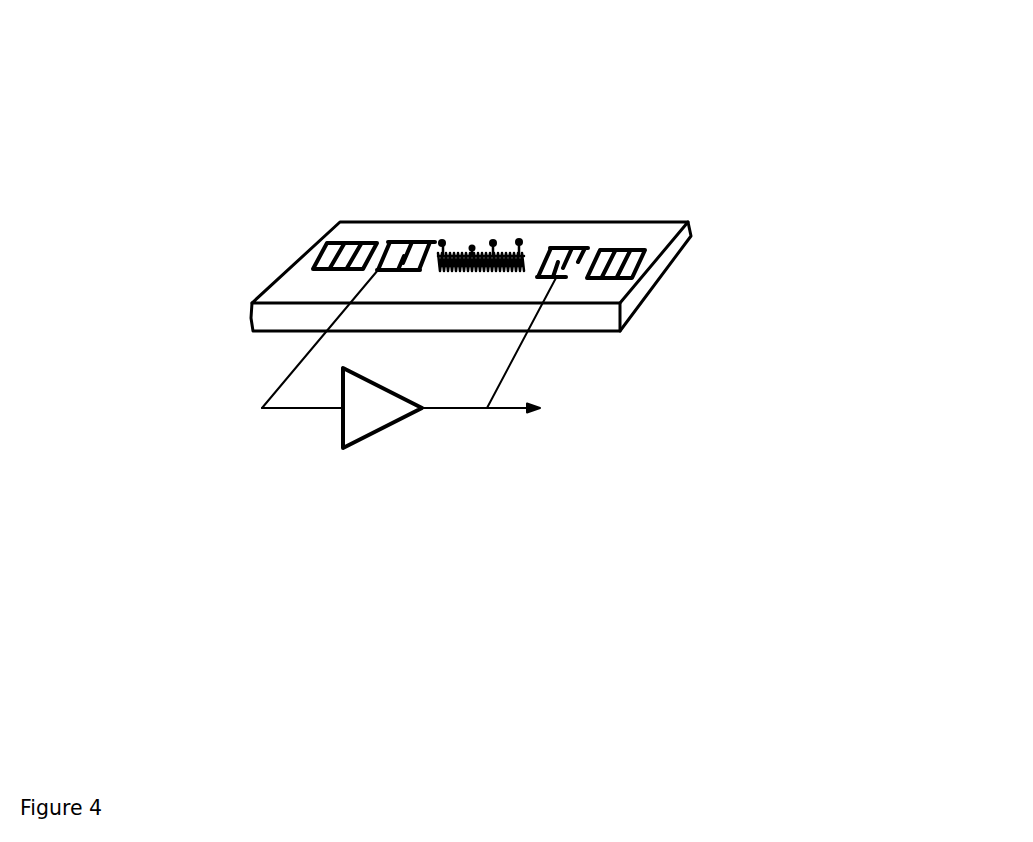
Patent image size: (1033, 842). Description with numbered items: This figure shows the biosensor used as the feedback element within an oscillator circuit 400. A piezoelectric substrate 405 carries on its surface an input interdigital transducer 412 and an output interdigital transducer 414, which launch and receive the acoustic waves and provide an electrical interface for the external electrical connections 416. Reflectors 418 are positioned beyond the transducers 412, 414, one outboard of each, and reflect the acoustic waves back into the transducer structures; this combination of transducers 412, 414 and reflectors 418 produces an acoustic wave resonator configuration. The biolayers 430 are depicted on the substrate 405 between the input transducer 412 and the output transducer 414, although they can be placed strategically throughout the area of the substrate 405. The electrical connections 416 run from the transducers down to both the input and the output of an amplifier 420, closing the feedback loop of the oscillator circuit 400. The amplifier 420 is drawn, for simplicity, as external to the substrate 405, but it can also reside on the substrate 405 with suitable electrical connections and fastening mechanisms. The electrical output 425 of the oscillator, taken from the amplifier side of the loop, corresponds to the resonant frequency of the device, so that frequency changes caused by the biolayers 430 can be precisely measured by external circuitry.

The oscillator circuit 400 is at (394, 427).
The piezoelectric substrate 405 is at (671, 305).
The input interdigital transducer 412 is at (583, 210).
The output interdigital transducer 414 is at (380, 230).
The electrical connections 416 is at (554, 376).
The reflectors 418 is at (291, 232).
The amplifier 420 is at (305, 478).
The electrical output 425 is at (512, 435).
The biolayers 430 is at (468, 233).